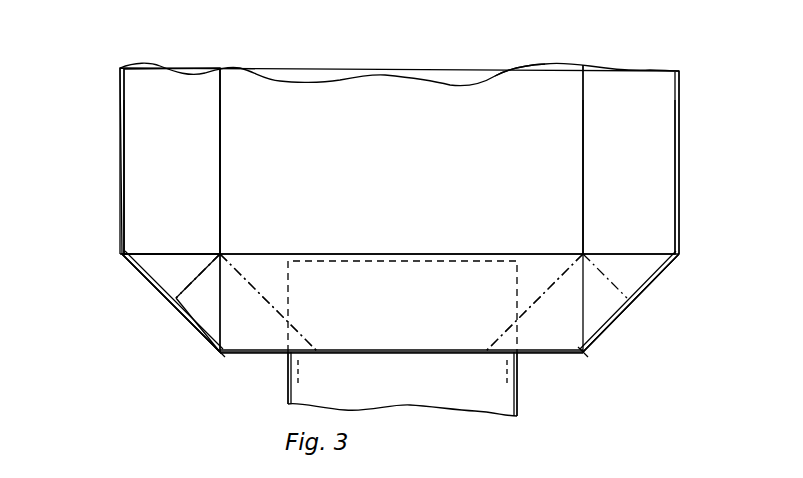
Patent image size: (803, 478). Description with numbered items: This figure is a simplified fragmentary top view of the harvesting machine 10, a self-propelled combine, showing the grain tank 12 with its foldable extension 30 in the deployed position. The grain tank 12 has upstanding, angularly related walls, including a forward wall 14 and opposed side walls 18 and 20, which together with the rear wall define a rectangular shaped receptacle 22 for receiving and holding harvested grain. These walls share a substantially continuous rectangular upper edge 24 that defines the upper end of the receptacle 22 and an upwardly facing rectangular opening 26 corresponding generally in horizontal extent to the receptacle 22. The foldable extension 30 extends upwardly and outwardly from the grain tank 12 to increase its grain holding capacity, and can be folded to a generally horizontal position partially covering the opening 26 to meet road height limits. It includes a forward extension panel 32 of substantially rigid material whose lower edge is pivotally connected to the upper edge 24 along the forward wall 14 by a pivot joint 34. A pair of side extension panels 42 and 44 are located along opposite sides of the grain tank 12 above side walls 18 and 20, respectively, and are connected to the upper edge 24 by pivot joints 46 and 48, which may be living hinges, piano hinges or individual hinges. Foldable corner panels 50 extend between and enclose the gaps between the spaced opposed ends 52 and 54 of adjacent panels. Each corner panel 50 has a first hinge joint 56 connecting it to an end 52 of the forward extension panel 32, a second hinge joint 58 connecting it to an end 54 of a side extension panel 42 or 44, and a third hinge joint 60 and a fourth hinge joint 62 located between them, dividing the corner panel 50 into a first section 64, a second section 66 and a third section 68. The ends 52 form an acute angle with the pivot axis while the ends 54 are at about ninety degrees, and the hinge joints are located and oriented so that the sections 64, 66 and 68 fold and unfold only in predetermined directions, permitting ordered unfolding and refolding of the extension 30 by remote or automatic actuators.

The harvesting machine 10 is at (185, 360).
The grain tank 12 is at (520, 66).
The forward wall 14 is at (276, 254).
The side wall 18 is at (583, 65).
The side wall 20 is at (220, 68).
The receptacle 22 is at (402, 122).
The upper edge 24 is at (220, 134).
The opening 26 is at (311, 90).
The foldable extension 30 is at (683, 260).
The forward extension panel 32 is at (410, 355).
The pivot joint 34 is at (523, 252).
The side extension panel 42 is at (679, 130).
The side extension panel 44 is at (120, 104).
The pivot joint 46 is at (583, 124).
The pivot joint 48 is at (220, 104).
The foldable corner panel 50 is at (220, 352).
The end 52 is at (302, 338).
The end 54 is at (130, 258).
The first hinge joint 56 is at (272, 300).
The second hinge joint 58 is at (155, 268).
The third hinge joint 60 is at (220, 307).
The fourth hinge joint 62 is at (182, 290).
The first section 64 is at (236, 290).
The second section 66 is at (213, 282).
The third section 68 is at (163, 263).